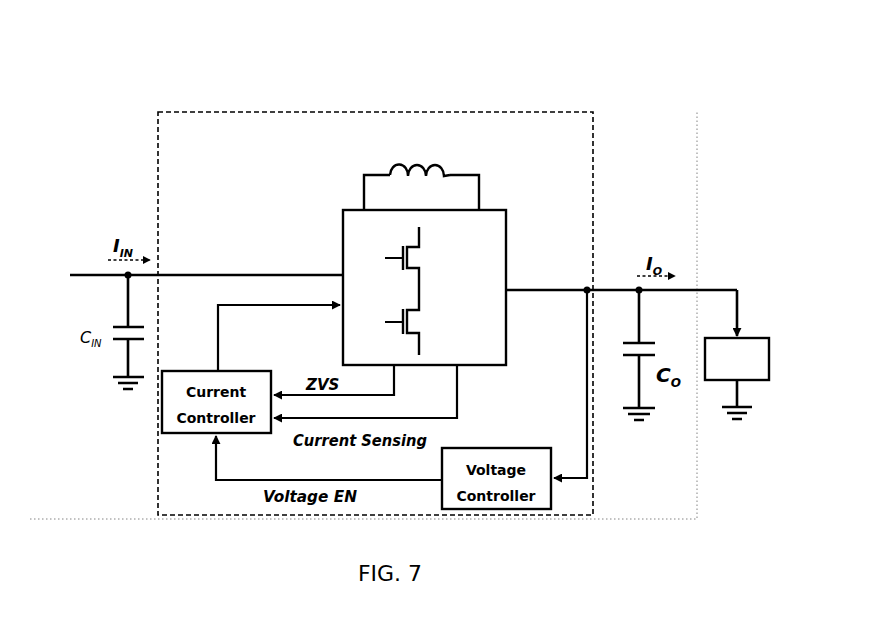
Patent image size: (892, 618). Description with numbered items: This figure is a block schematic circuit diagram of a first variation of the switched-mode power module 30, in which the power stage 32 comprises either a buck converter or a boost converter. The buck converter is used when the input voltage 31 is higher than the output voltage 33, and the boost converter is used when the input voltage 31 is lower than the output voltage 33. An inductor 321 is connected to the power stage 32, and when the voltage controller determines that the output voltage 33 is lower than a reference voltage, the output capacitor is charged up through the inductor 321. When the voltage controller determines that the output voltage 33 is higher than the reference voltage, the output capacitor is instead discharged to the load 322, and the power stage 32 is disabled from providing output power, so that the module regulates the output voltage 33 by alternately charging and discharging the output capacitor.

The switched-mode power module 30 is at (190, 96).
The input voltage 31 is at (50, 264).
The power stage 32 is at (513, 229).
The inductor 321 is at (433, 134).
The output voltage 33 is at (615, 262).
The load 322 is at (768, 335).